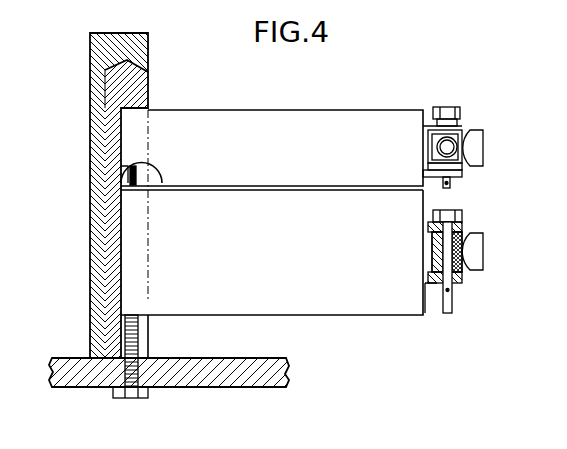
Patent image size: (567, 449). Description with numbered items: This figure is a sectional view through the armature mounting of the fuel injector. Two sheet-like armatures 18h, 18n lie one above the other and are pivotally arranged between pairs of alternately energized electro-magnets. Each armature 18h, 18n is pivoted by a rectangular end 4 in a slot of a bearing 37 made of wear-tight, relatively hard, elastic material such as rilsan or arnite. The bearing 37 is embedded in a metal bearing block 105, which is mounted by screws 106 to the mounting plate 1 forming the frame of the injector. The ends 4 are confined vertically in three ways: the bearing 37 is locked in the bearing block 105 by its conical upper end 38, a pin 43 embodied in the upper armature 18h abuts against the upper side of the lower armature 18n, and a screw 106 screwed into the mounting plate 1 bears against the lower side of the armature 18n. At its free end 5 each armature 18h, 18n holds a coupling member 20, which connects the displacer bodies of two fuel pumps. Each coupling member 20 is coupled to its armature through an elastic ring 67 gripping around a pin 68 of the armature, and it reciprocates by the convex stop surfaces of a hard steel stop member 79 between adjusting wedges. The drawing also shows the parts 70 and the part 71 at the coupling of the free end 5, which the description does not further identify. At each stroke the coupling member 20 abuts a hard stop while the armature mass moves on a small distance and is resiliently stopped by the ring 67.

The mounting plate 1 is at (260, 374).
The rectangular end 4 is at (137, 137).
The free end 5 is at (411, 142).
The armature 18h is at (285, 148).
The armature 18n is at (272, 252).
The coupling member 20 is at (468, 129).
The bearing 37 is at (104, 225).
The conical upper end 38 is at (128, 62).
The pin 43 is at (150, 172).
The elastic ring 67 is at (431, 259).
The pin 68 is at (446, 107).
The washer 70 is at (426, 173).
The block 71 is at (428, 150).
The stop member 79 is at (470, 159).
The bearing block 105 is at (96, 52).
The screws 106 is at (116, 394).